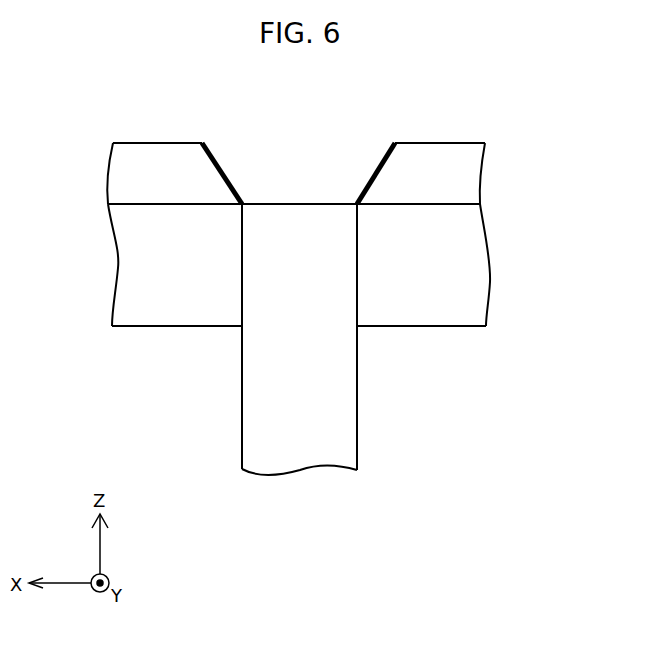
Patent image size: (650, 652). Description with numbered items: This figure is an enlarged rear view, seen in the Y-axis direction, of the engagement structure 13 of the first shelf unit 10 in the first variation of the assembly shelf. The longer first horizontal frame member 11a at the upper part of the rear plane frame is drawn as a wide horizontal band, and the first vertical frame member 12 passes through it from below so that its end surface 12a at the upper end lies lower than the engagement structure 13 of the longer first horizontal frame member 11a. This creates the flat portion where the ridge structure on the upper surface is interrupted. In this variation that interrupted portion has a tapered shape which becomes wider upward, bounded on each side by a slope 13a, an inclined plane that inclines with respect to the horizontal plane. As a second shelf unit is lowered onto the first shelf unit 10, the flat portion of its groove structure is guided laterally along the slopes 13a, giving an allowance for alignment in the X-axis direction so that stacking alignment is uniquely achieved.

The first shelf unit 10 is at (497, 110).
The longer first horizontal frame member 11a is at (477, 262).
The first vertical frame member 12 is at (351, 416).
The end surface 12a is at (270, 204).
The engagement structure 13 is at (477, 172).
The slope 13a is at (221, 164).